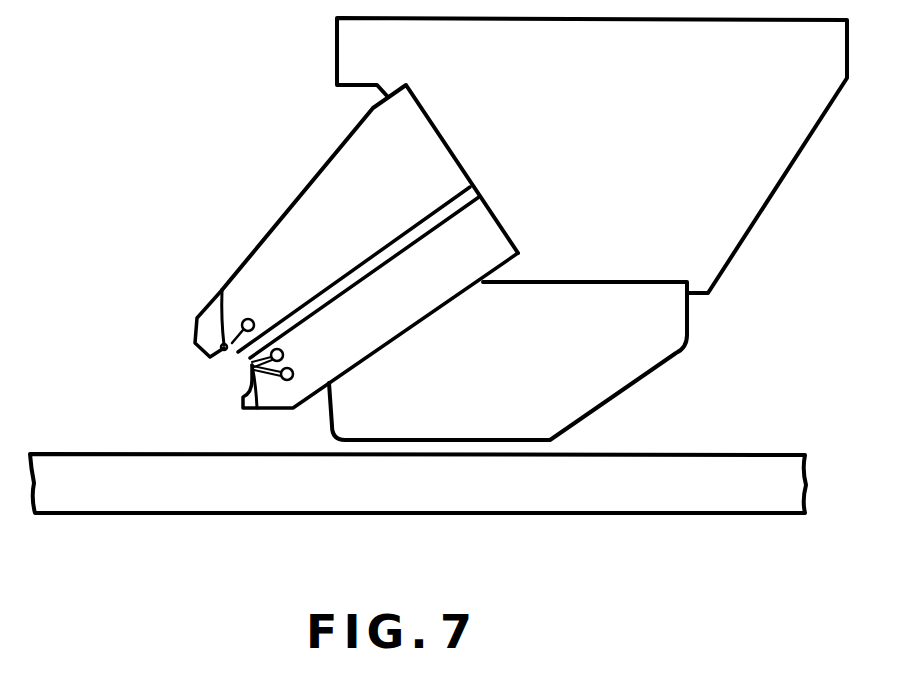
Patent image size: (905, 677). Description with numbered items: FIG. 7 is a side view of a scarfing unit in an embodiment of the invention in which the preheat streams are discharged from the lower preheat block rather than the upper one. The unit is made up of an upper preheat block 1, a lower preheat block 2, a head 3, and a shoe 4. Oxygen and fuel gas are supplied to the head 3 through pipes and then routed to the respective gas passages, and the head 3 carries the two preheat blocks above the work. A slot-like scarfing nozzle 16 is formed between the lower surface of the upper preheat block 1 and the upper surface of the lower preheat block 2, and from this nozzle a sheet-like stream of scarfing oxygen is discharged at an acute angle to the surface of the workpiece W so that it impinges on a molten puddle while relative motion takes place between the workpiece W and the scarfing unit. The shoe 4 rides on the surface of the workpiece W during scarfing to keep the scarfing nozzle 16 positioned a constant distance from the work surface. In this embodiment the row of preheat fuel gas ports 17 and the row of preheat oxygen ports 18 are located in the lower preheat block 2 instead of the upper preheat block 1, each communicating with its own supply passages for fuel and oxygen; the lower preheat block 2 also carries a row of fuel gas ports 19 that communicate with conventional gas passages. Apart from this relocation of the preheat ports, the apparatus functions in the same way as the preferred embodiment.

The upper preheat block 1 is at (272, 240).
The lower preheat block 2 is at (372, 344).
The head 3 is at (781, 156).
The shoe 4 is at (678, 345).
The scarfing nozzle 16 is at (245, 354).
The preheat fuel gas ports 17 is at (290, 338).
The preheat oxygen ports 18 is at (253, 409).
The fuel gas ports 19 is at (221, 289).
The workpiece W is at (763, 508).